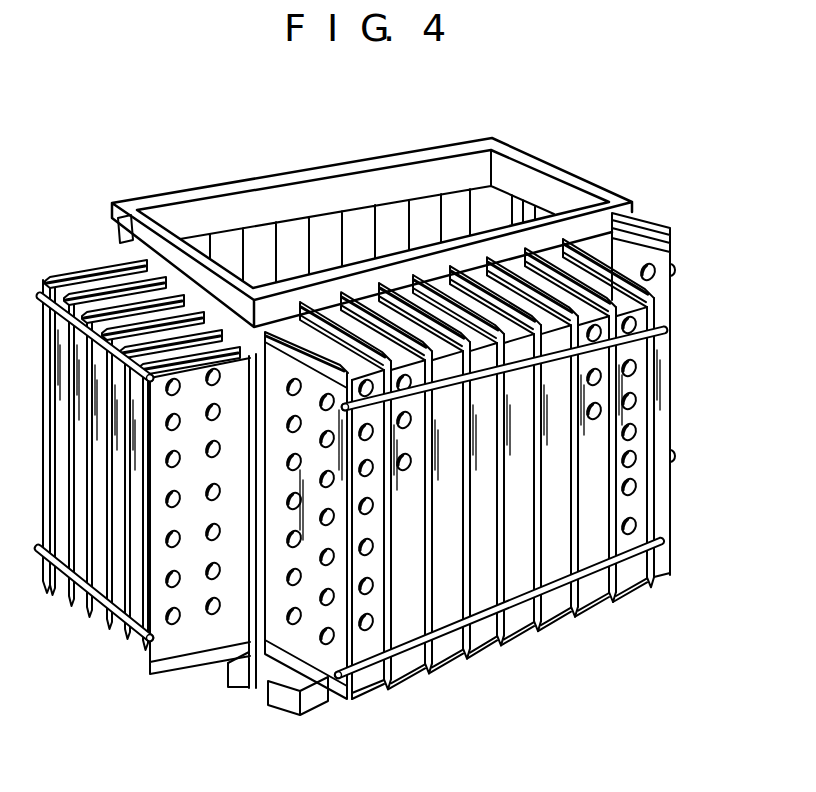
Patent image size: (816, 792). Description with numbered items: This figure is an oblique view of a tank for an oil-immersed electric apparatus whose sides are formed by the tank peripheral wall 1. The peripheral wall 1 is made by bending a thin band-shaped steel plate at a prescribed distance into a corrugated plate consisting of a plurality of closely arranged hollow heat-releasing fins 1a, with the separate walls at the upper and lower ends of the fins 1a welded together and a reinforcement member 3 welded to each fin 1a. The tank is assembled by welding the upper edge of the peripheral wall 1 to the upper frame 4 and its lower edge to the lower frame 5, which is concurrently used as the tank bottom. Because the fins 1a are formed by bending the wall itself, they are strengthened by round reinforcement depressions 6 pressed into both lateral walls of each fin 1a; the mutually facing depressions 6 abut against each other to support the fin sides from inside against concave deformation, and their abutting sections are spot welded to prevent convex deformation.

The tank peripheral wall 1 is at (40, 459).
The fin 1a is at (190, 648).
The reinforcement member 3 is at (74, 319).
The upper frame 4 is at (142, 238).
The lower frame 5 is at (243, 684).
The reinforcement depression 6 is at (172, 630).